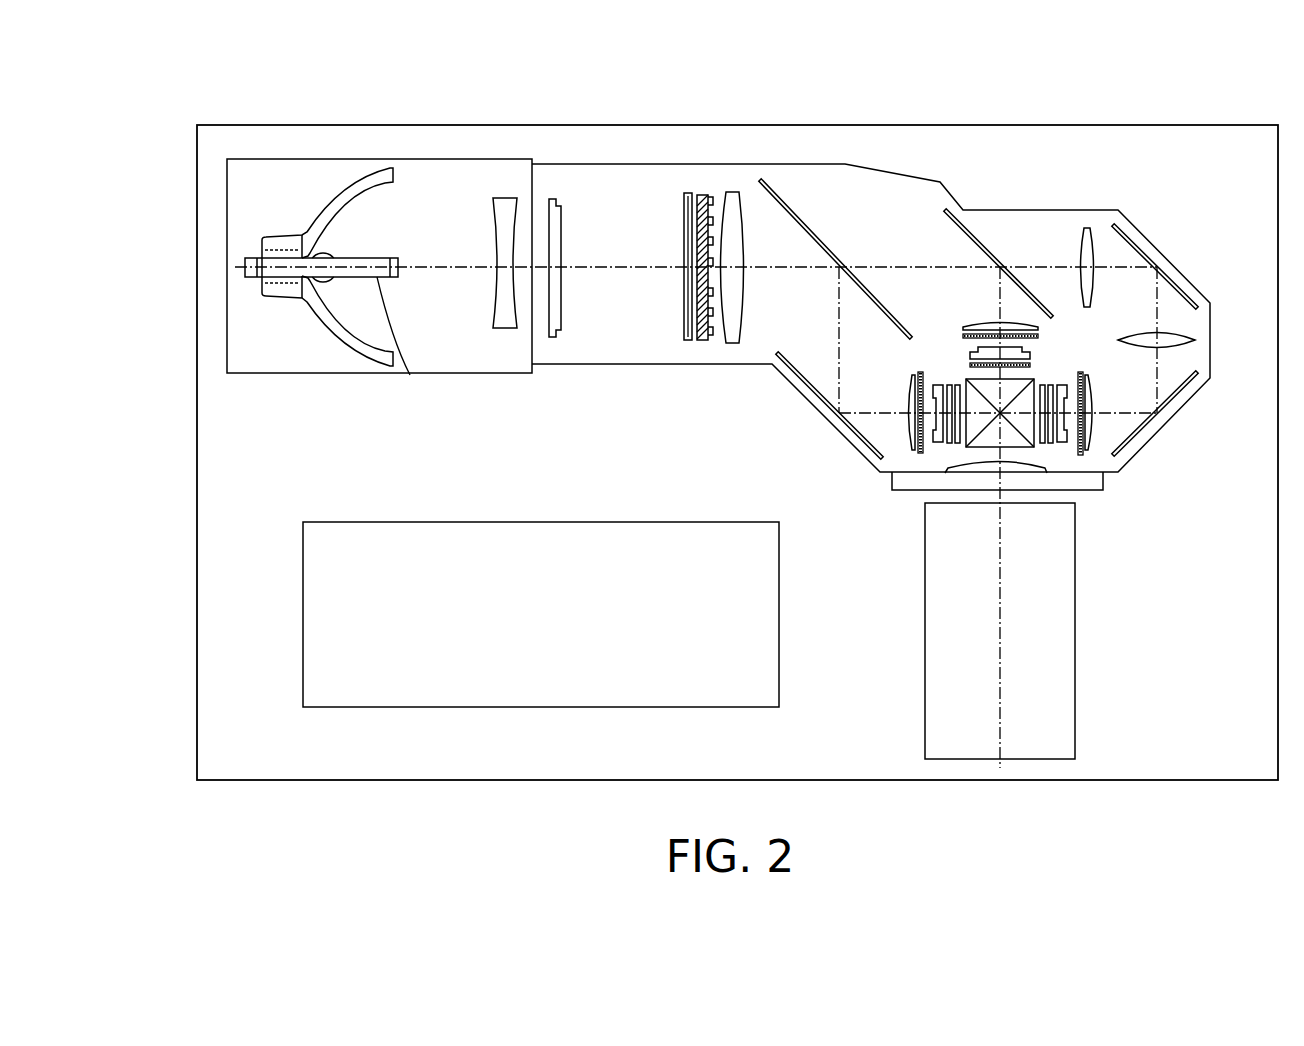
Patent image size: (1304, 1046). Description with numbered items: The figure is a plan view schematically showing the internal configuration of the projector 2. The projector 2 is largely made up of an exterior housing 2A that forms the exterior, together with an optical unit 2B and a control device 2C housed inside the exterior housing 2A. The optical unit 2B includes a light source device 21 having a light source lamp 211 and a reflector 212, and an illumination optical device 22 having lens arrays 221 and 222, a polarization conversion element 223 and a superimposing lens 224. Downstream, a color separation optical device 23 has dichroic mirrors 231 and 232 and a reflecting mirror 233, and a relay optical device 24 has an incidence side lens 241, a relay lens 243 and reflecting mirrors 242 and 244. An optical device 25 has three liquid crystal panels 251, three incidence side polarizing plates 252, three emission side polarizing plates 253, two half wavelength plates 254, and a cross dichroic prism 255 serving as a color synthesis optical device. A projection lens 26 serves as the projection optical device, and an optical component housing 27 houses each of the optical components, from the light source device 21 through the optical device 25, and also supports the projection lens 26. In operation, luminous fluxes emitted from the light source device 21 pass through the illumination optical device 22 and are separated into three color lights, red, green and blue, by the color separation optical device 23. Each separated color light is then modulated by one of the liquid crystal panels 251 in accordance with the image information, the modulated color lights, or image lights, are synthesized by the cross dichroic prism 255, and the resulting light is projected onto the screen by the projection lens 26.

The projector 2 is at (228, 90).
The exterior housing 2A is at (873, 781).
The optical unit 2B is at (755, 450).
The control device 2C is at (780, 612).
The light source device 21 is at (379, 308).
The light source lamp 211 is at (330, 426).
The reflector 212 is at (338, 338).
The illumination optical device 22 is at (537, 84).
The lens array 221 is at (552, 199).
The lens array 222 is at (687, 193).
The polarization conversion element 223 is at (703, 195).
The superimposing lens 224 is at (733, 192).
The color separation optical device 23 is at (897, 205).
The dichroic mirror 231 is at (797, 218).
The dichroic mirror 232 is at (985, 245).
The reflecting mirror 233 is at (793, 376).
The relay optical device 24 is at (1208, 315).
The incidence side lens 241 is at (1087, 227).
The reflecting mirror 242 is at (1130, 235).
The relay lens 243 is at (1205, 338).
The reflecting mirror 244 is at (1188, 390).
The optical device 25 is at (915, 320).
The liquid crystal panel 251 is at (1025, 350).
The incidence side polarizing plate 252 is at (963, 336).
The emission side polarizing plate 253 is at (965, 366).
The ½ wavelength plate 254 is at (957, 447).
The cross dichroic prism 255 is at (985, 460).
The projection lens 26 is at (1077, 640).
The optical component housing 27 is at (600, 366).